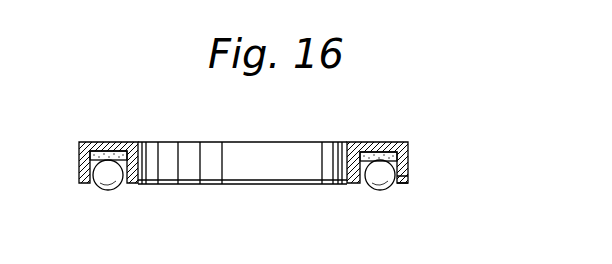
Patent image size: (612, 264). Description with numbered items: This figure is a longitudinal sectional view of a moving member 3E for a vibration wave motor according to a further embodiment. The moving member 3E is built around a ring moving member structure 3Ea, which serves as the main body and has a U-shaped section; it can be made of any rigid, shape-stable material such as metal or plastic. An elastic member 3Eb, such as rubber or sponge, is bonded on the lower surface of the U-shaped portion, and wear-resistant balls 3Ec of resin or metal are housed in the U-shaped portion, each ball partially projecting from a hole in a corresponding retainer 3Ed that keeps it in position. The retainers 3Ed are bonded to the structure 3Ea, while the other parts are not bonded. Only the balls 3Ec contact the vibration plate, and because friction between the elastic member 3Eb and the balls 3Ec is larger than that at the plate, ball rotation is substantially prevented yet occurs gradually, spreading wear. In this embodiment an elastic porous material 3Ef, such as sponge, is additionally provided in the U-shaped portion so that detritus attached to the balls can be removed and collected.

The moving member 3E is at (480, 123).
The ring moving member structure 3Ea is at (407, 145).
The elastic member 3Eb is at (397, 157).
The wear-resistant balls 3Ec is at (404, 180).
The retainers 3Ed is at (394, 187).
The elastic porous material 3Ef is at (88, 162).